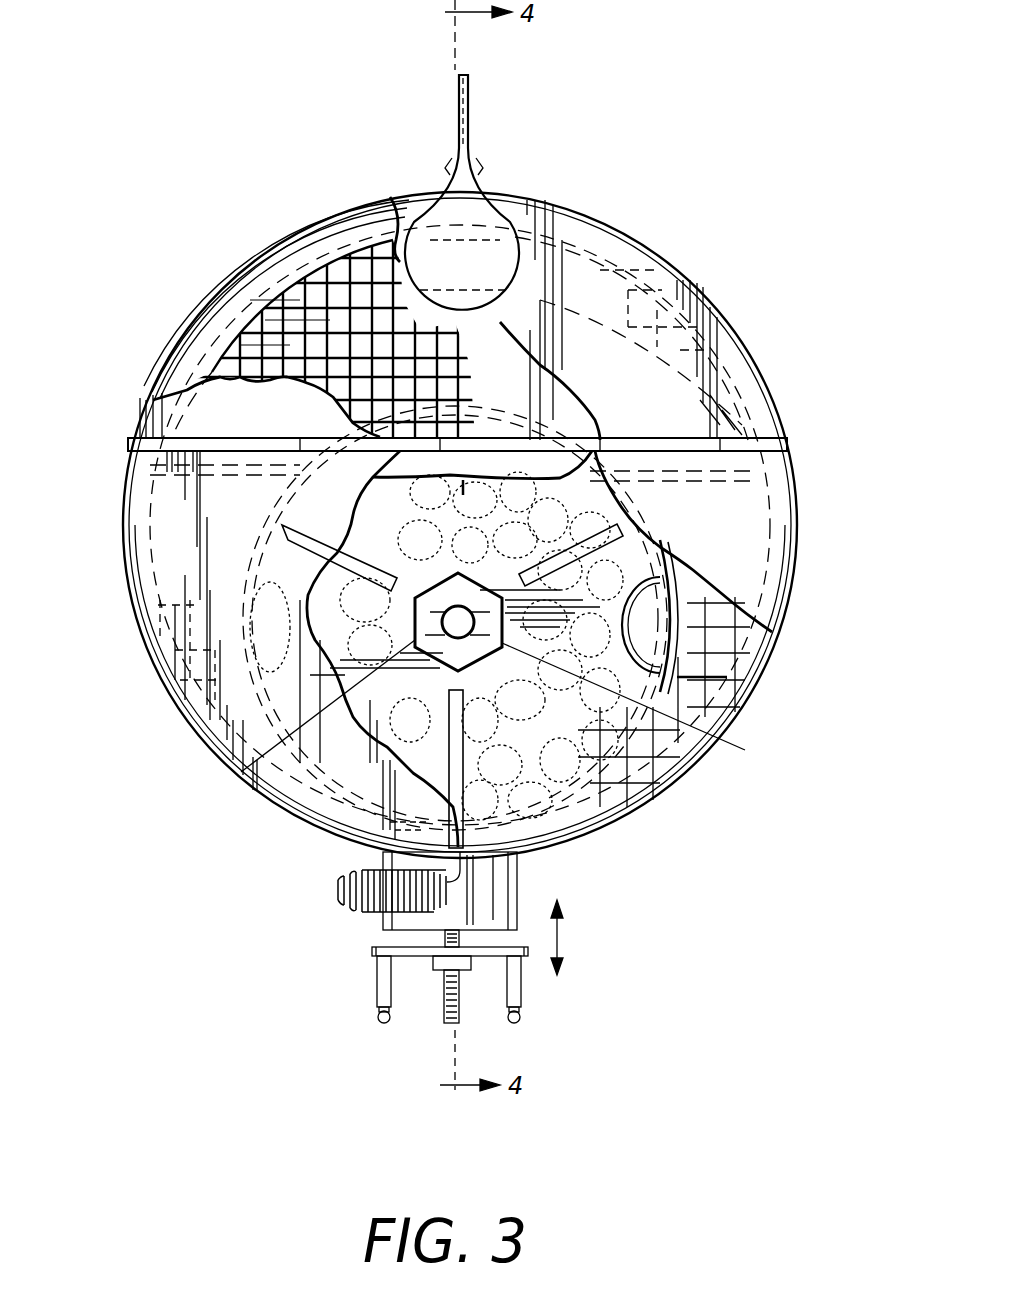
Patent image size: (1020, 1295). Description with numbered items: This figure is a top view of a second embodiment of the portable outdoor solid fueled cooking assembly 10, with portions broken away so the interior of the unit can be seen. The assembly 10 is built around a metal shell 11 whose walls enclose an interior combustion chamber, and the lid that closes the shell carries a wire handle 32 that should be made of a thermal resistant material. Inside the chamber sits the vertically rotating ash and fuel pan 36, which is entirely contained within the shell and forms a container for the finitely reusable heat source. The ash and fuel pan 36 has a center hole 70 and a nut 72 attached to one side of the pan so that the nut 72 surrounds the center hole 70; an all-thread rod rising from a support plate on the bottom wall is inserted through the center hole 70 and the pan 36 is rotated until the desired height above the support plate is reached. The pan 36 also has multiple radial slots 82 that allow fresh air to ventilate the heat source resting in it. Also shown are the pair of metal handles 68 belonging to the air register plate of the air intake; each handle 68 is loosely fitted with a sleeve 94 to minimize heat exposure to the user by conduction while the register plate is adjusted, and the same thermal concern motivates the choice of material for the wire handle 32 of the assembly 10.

The portable outdoor solid fueled cooking assembly 10 is at (150, 163).
The metal shell 11 is at (116, 483).
The wire handle 32 is at (338, 890).
The ash and fuel pan 36 is at (530, 837).
The metal handles 68 is at (378, 1022).
The center hole 70 is at (250, 768).
The nut 72 is at (717, 740).
The radial slots 82 is at (290, 548).
The sleeve 94 is at (375, 984).